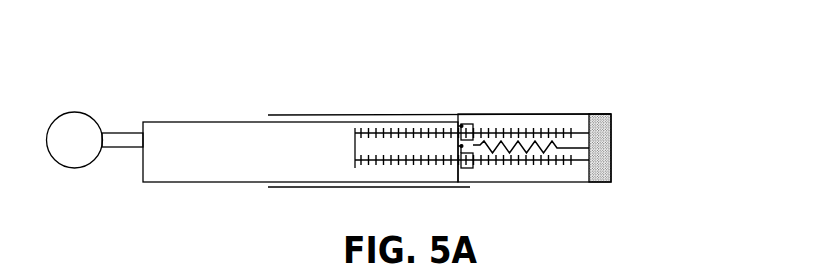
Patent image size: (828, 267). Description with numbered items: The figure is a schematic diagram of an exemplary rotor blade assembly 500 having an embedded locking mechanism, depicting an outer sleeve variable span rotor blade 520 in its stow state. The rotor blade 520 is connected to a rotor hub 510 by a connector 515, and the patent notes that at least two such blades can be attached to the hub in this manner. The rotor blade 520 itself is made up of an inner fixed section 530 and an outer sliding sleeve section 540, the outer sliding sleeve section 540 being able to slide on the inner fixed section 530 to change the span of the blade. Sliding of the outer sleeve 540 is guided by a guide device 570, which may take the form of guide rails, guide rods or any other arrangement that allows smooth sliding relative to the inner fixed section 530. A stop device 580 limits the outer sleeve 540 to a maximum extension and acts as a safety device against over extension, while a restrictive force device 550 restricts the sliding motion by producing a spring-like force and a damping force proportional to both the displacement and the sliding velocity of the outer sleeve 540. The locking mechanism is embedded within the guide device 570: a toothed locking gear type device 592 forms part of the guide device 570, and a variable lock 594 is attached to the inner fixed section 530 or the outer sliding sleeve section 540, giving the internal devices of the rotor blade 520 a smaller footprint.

The rotor blade assembly 500 is at (653, 65).
The rotor hub 510 is at (70, 112).
The connector 515 is at (122, 133).
The variable span rotor blade 520 is at (602, 52).
The inner fixed section 530 is at (188, 122).
The outer sliding sleeve section 540 is at (353, 114).
The restrictive force device 550 is at (563, 183).
The guide device 570 is at (493, 166).
The stop device 580 is at (355, 149).
The toothed locking gear type device 592 is at (554, 130).
The variable lock 594 is at (470, 124).